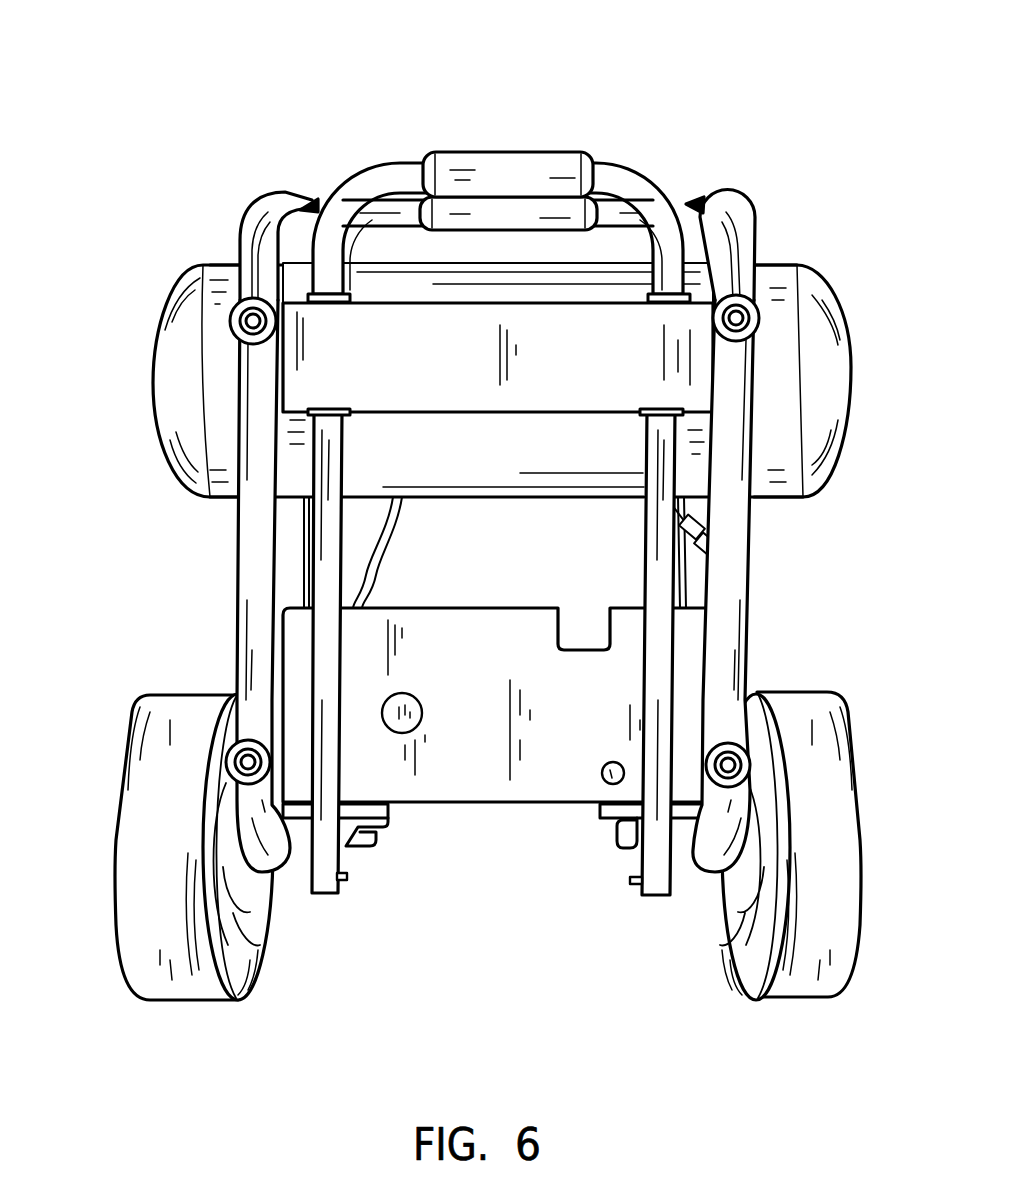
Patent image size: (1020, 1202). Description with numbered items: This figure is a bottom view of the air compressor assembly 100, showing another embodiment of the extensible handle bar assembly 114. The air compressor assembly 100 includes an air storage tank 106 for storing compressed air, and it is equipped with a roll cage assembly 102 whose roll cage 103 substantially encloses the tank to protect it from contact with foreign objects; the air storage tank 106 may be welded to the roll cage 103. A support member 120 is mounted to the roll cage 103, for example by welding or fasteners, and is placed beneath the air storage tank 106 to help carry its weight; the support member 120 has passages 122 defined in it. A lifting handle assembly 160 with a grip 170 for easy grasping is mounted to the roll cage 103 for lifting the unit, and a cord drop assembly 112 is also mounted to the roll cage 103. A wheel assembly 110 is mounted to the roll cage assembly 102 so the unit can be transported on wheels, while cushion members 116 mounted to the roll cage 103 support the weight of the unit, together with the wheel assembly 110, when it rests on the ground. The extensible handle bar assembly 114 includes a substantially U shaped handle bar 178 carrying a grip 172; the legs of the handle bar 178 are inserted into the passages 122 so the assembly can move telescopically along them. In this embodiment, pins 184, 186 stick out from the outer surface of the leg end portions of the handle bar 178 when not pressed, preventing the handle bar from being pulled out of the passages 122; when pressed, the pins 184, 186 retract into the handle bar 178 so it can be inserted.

The air compressor assembly 100 is at (805, 112).
The roll cage assembly 102 is at (256, 205).
The roll cage 103 is at (272, 195).
The air storage tank 106 is at (838, 343).
The wheel assembly 110 is at (820, 780).
The cord drop assembly 112 is at (613, 823).
The extensible handle bar assembly 114 is at (512, 178).
The cushion members 116 is at (748, 300).
The support member 120 is at (426, 376).
The passages 122 is at (300, 295).
The lifting handle assembly 160 is at (325, 198).
The grip 170 is at (480, 216).
The grip 172 is at (482, 157).
The handle bar 178 is at (382, 172).
The pin 184 is at (348, 885).
The pin 186 is at (630, 882).